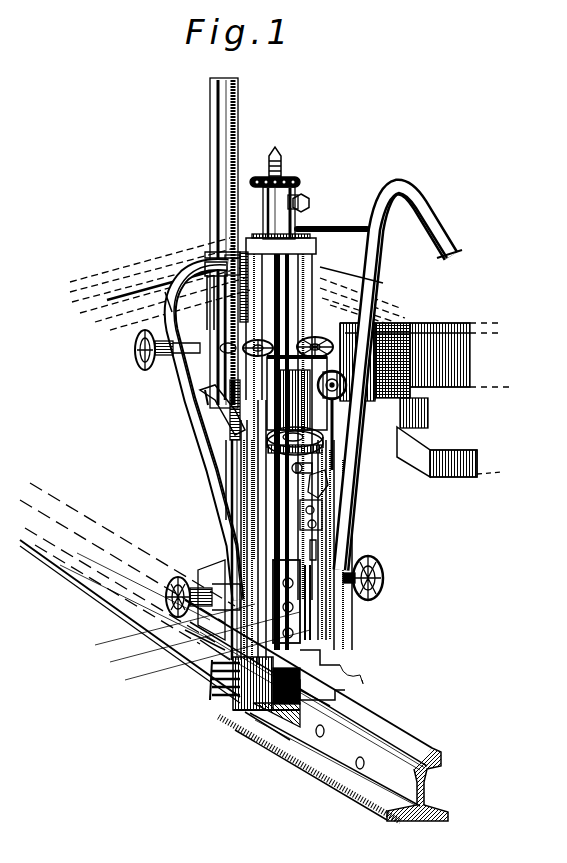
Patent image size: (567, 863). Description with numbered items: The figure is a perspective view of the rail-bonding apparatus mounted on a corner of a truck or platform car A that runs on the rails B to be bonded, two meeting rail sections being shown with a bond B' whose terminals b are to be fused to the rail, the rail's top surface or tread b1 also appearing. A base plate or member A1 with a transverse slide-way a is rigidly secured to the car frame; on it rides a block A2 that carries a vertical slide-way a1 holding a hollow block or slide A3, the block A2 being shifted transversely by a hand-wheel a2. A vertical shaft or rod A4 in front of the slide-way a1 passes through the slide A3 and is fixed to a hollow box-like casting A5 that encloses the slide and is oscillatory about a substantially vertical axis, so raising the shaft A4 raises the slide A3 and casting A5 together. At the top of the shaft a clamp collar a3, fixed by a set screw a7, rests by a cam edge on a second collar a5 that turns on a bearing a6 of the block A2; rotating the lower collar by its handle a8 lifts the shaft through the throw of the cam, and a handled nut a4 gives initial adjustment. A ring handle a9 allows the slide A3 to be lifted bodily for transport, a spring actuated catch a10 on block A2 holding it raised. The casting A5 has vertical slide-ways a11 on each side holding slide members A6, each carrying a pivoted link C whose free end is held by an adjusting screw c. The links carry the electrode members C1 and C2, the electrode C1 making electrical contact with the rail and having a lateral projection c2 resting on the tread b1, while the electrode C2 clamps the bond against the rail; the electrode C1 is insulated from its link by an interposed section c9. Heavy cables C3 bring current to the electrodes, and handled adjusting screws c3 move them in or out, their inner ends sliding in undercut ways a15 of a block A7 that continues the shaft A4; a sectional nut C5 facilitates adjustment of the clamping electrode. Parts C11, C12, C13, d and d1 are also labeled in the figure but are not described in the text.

The truck or platform car A is at (393, 317).
The base plate A1 is at (183, 280).
The block A2 is at (240, 377).
The hollow block A3 is at (240, 447).
The vertical shaft A4 is at (284, 157).
The hollow box-like casting A5 is at (240, 403).
The slide members A6 is at (430, 470).
The block A7 is at (230, 668).
The transverse slide-way a is at (278, 458).
The vertical slide-way a1 is at (220, 270).
The hand-wheel a2 is at (134, 348).
The clamp collar a3 is at (309, 203).
The handled nut a4 is at (300, 181).
The second collar a5 is at (297, 207).
The bearing a6 is at (253, 237).
The set screw a7 is at (305, 200).
The handle a8 is at (337, 233).
The ring handle a9 is at (330, 467).
The spring actuated catch a10 is at (217, 343).
The vertical slide-way a11 is at (270, 293).
The undercut ways a15 is at (200, 648).
The rails B is at (235, 653).
The bond B' is at (267, 739).
The bond terminals b is at (330, 678).
The rail tread b1 is at (387, 727).
The link C is at (240, 460).
The electrode member C1 is at (267, 713).
The electrode C2 is at (184, 680).
The cables C3 is at (417, 207).
The sectional nut C5 is at (185, 636).
The slotted plate C11 is at (327, 620).
The hand wheel C12 is at (240, 557).
The arm C13 is at (167, 280).
The adjusting screw c is at (330, 480).
The lateral projection c2 is at (313, 657).
The handled adjusting screws c3 is at (363, 560).
The interposed insulating section c9 is at (345, 524).
The wheel d is at (345, 402).
The wheel bracket d1 is at (330, 427).